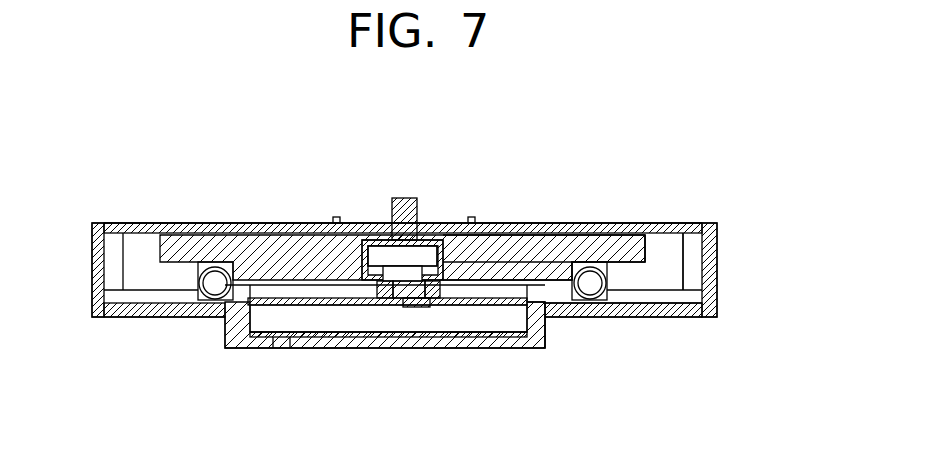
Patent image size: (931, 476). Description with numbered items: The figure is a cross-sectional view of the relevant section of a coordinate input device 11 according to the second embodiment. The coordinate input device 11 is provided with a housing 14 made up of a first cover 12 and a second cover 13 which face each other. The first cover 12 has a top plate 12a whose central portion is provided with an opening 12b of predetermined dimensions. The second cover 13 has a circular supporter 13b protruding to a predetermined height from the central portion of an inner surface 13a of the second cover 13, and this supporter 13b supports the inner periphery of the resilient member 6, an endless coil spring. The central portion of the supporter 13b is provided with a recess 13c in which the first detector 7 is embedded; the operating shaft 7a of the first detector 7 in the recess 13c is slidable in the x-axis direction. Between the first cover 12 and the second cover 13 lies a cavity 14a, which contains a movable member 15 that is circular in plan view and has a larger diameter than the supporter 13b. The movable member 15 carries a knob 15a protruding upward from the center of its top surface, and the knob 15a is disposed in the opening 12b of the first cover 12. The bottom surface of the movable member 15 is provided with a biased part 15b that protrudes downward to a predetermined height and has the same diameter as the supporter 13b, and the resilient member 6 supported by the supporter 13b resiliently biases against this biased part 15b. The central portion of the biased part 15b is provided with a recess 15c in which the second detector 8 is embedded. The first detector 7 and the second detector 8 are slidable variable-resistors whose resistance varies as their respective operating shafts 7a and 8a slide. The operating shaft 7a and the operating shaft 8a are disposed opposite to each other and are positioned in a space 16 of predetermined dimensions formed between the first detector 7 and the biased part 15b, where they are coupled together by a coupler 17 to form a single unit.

The coordinate input device 11 is at (118, 212).
The first cover 12 is at (192, 215).
The top plate 12a is at (258, 228).
The opening 12b is at (337, 217).
The movable member 15 is at (543, 230).
The knob 15a is at (398, 208).
The biased part 15b is at (488, 265).
The recess 15c is at (384, 242).
The second detector 8 is at (443, 232).
The operating shaft 8a is at (429, 250).
The resilient member 6 is at (590, 283).
The housing 14 is at (735, 256).
The cavity 14a is at (665, 262).
The second cover 13 is at (620, 328).
The inner surface 13a is at (647, 300).
The supporter 13b is at (547, 320).
The recess 13c is at (255, 332).
The space 16 is at (298, 302).
The coupler 17 is at (378, 300).
The first detector 7 is at (455, 325).
The operating shaft 7a is at (415, 320).